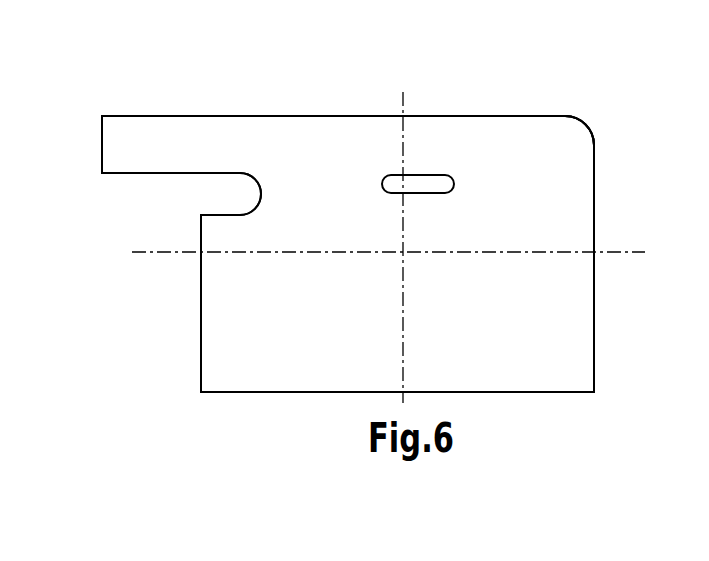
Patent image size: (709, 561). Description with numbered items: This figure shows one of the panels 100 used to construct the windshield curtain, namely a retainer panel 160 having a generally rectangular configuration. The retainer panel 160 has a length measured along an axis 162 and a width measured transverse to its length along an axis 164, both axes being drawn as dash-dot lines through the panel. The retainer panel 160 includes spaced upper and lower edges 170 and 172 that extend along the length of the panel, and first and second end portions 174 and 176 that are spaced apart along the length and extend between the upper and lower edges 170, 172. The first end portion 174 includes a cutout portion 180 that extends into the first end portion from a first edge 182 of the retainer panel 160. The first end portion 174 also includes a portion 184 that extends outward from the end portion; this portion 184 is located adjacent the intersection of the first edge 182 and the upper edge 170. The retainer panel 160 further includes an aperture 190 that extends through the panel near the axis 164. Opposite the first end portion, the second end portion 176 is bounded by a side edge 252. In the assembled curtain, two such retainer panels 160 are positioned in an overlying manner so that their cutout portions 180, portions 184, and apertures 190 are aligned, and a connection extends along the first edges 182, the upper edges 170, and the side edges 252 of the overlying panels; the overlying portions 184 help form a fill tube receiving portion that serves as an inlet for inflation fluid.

The panels 100 is at (255, 80).
The retainer panel 160 is at (307, 78).
The axis 162 is at (613, 250).
The axis 164 is at (403, 133).
The upper edge 170 is at (512, 113).
The lower edge 172 is at (492, 392).
The first end portion 174 is at (208, 312).
The second end portion 176 is at (590, 172).
The cutout portion 180 is at (235, 192).
The first edge 182 is at (200, 283).
The portion 184 is at (137, 142).
The aperture 190 is at (433, 186).
The side edge 252 is at (593, 295).